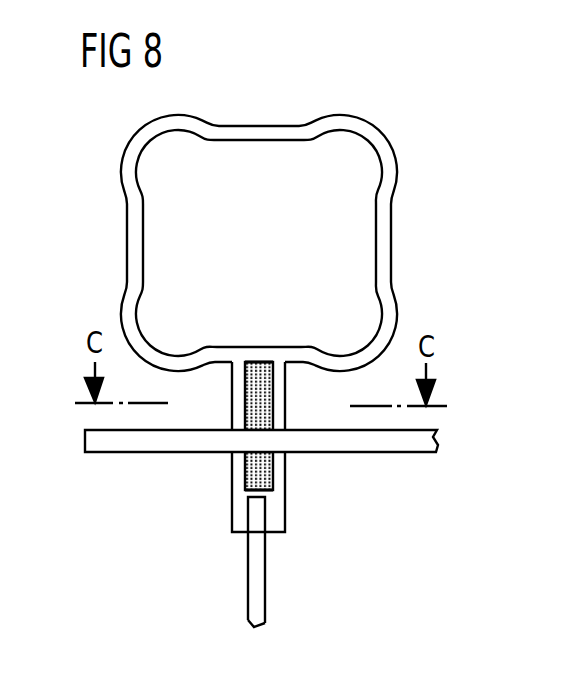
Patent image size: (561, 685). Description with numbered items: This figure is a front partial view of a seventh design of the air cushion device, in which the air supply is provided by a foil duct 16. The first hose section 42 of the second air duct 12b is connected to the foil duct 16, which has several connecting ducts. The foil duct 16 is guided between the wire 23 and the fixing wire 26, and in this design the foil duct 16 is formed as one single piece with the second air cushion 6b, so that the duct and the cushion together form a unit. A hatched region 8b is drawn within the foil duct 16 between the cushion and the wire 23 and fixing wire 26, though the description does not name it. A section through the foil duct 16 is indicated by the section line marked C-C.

The second air cushion 6b is at (368, 242).
The filling element 8b is at (262, 345).
The foil duct 16 is at (275, 500).
The wire 23 is at (261, 470).
The fixing wire 26 is at (143, 441).
The second air duct 12b is at (315, 562).
The first hose section 42 is at (257, 588).